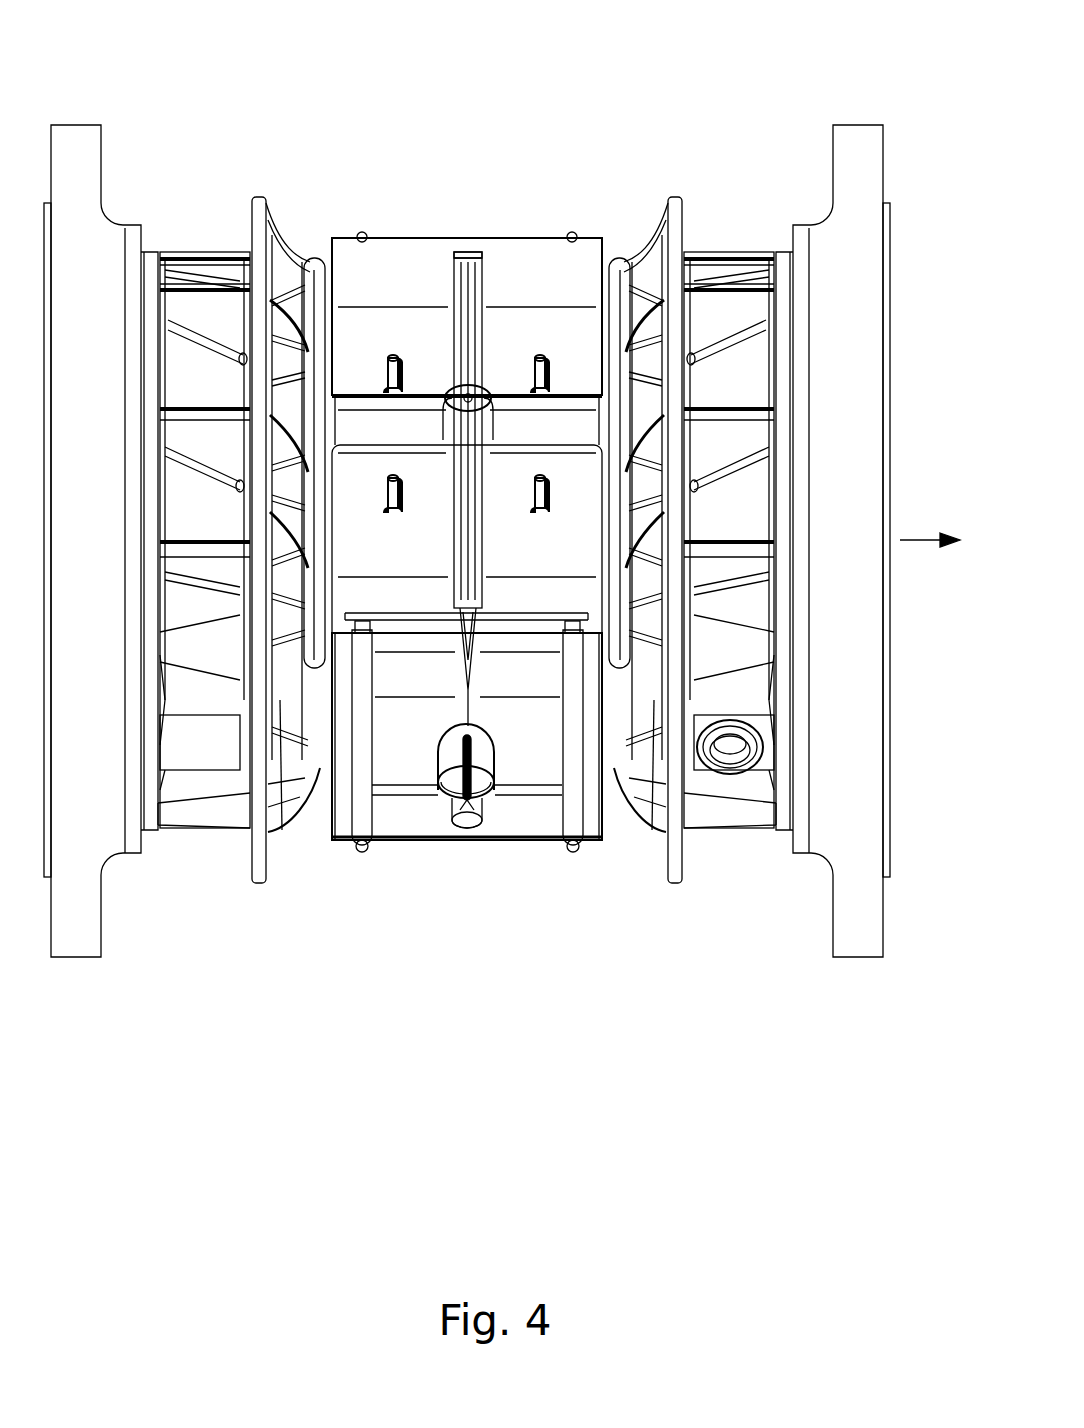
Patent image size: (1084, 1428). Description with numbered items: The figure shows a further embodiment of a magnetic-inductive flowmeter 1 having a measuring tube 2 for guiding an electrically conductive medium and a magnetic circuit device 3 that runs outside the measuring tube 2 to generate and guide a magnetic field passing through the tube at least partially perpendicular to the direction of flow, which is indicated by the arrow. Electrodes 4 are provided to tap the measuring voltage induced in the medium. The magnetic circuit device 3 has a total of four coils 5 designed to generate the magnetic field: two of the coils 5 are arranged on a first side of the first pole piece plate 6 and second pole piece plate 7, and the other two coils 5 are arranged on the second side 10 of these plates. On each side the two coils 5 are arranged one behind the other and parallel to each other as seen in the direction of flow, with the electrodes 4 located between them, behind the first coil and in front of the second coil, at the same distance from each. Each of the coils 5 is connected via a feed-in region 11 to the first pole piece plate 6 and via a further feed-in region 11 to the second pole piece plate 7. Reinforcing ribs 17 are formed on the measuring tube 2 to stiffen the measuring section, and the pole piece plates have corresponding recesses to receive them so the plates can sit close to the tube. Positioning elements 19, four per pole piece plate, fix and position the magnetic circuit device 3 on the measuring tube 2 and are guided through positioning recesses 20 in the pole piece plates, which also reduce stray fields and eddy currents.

The magnetic-inductive flowmeter 1 is at (150, 86).
The measuring tube 2 is at (705, 330).
The magnetic circuit device 3 is at (490, 237).
The electrodes 4 is at (452, 778).
The coils 5 is at (360, 237).
The first pole piece plate 6 is at (383, 257).
The second pole piece plate 7 is at (522, 822).
The second side 10 is at (585, 570).
The feed-in region 11 is at (358, 652).
The reinforcing ribs 17 is at (466, 252).
The positioning elements 19 is at (556, 493).
The positioning recesses 20 is at (541, 512).